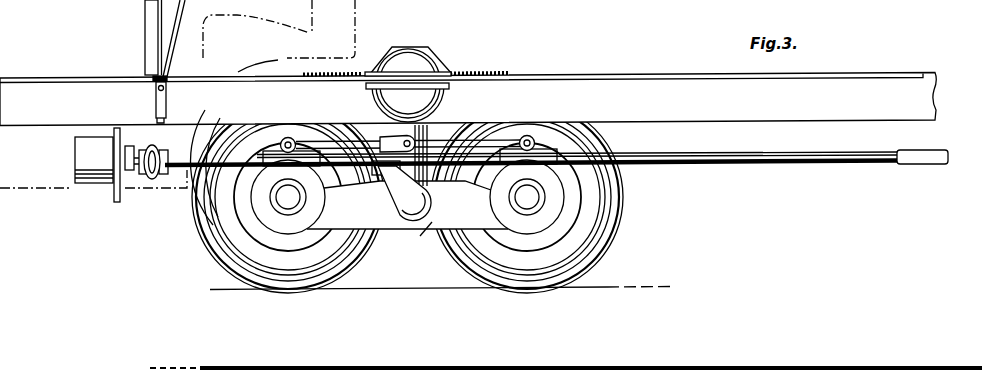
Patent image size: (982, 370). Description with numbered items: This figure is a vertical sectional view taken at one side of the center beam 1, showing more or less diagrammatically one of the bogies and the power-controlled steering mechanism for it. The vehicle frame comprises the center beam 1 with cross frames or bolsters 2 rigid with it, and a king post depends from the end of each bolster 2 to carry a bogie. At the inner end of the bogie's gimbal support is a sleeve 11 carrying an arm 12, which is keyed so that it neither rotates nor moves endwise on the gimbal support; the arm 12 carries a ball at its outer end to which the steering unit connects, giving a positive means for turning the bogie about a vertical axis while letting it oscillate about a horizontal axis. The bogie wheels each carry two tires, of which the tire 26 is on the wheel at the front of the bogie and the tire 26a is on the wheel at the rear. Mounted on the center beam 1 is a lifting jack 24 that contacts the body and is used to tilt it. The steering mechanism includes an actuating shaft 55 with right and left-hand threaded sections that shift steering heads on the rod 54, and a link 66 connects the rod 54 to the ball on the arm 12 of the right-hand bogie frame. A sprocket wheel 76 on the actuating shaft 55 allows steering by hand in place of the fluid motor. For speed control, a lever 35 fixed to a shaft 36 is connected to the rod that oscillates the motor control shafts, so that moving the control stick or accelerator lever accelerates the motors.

The center beam 1 is at (690, 92).
The cross frame or bolster 2 is at (490, 72).
The rod 54 is at (586, 78).
The lifting jack 24 is at (413, 53).
The lever 35 is at (153, 101).
The shaft 36 is at (157, 121).
The sprocket wheel 76 is at (152, 146).
The actuating shaft 55 is at (212, 164).
The sleeve 11 is at (98, 186).
The tire 26 is at (207, 215).
The tire 26a is at (627, 199).
The arm 12 is at (393, 199).
The link 66 is at (925, 163).